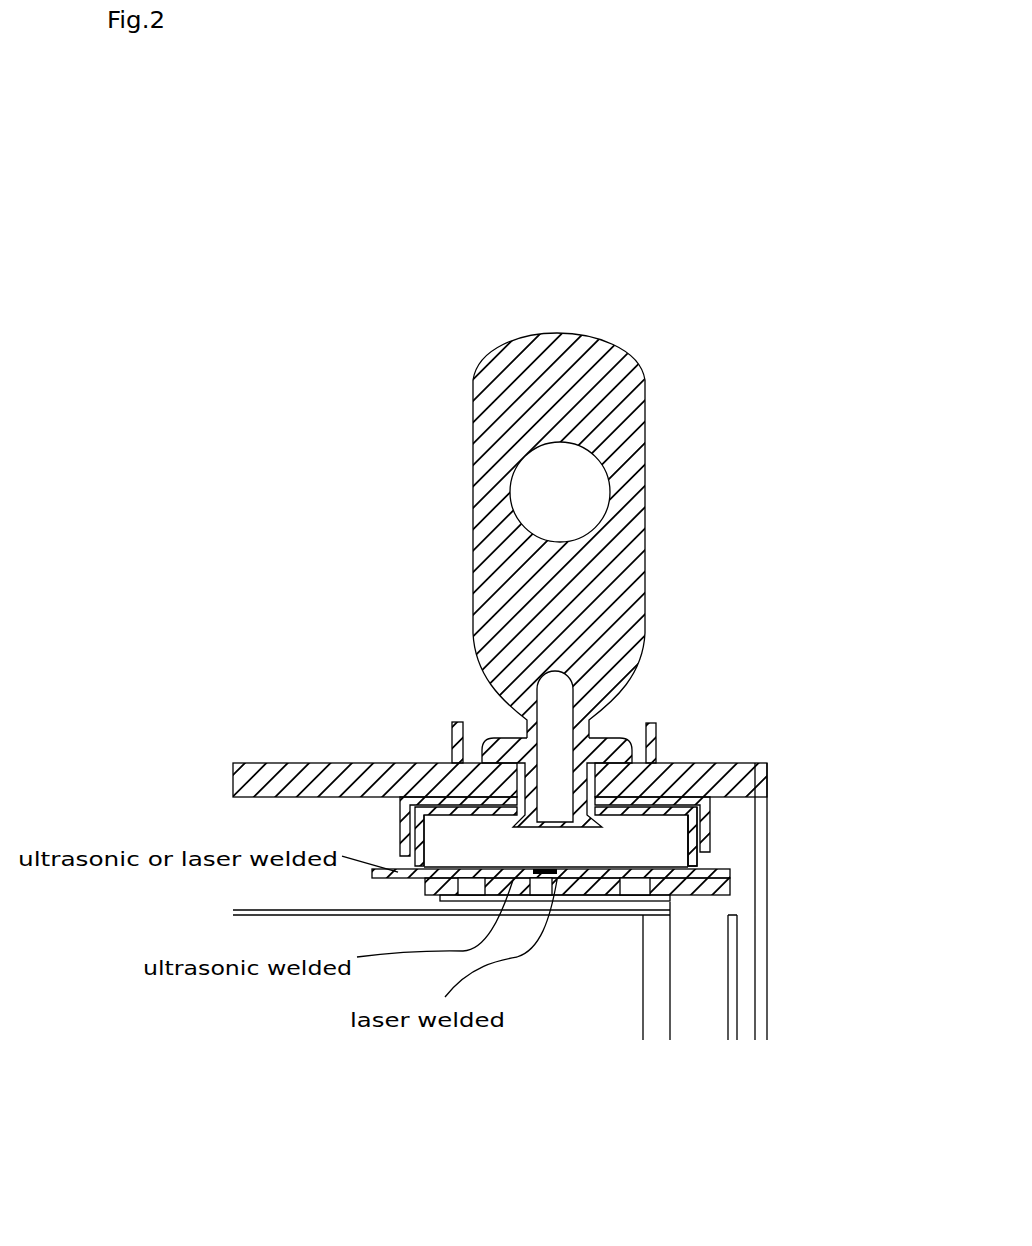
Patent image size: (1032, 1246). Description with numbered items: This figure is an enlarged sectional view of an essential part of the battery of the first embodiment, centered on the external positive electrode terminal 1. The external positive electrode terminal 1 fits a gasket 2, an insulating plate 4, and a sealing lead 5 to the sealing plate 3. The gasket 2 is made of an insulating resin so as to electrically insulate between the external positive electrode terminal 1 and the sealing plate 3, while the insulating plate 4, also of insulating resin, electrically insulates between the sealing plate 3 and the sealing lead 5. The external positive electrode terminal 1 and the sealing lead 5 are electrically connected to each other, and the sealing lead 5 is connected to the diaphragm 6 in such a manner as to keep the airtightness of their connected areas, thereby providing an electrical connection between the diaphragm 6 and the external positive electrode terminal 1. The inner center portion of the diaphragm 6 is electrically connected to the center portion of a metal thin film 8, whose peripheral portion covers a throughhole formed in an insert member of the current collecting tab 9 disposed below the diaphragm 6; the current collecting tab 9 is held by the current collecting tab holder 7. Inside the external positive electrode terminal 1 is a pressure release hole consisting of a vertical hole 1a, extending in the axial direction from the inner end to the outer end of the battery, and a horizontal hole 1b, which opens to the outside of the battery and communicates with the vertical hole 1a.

The external positive electrode terminal 1 is at (645, 445).
The vertical hole 1a is at (548, 740).
The horizontal hole 1b is at (555, 678).
The gasket 2 is at (653, 737).
The sealing plate 3 is at (313, 763).
The insulating plate 4 is at (706, 812).
The sealing lead 5 is at (700, 848).
The diaphragm 6 is at (655, 838).
The current collecting tab holder 7 is at (578, 893).
The metal thin film 8 is at (599, 895).
The current collecting tab 9 is at (710, 895).